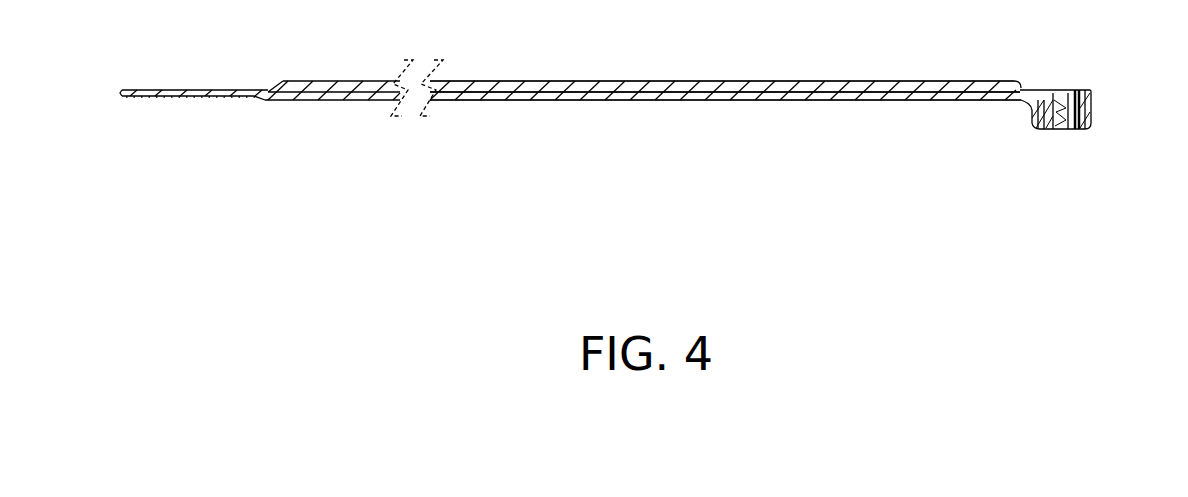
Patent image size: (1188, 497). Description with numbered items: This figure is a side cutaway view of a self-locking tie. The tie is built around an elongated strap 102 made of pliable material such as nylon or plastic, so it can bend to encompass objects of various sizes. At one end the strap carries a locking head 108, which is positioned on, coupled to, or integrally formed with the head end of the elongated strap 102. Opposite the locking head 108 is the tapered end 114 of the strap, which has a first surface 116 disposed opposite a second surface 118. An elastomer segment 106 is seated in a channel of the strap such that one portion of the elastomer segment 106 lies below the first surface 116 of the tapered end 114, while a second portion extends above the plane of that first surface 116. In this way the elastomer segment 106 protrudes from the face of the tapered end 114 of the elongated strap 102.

The elongated strap 102 is at (712, 97).
The elastomer segment 106 is at (733, 81).
The locking head 108 is at (1092, 93).
The tapered end 114 is at (158, 95).
The first surface 116 is at (233, 89).
The second surface 118 is at (490, 101).